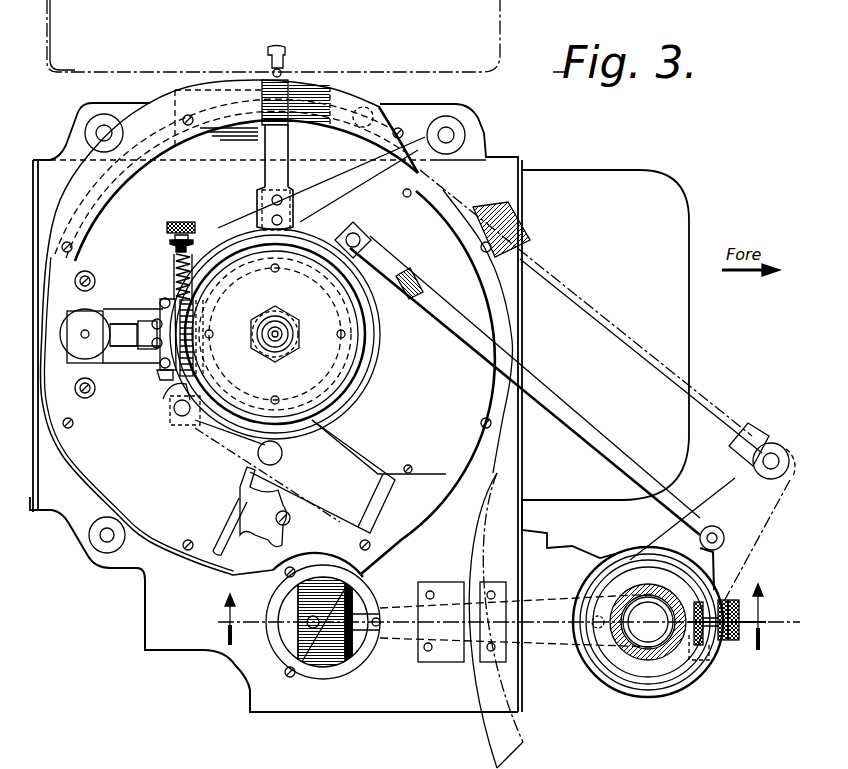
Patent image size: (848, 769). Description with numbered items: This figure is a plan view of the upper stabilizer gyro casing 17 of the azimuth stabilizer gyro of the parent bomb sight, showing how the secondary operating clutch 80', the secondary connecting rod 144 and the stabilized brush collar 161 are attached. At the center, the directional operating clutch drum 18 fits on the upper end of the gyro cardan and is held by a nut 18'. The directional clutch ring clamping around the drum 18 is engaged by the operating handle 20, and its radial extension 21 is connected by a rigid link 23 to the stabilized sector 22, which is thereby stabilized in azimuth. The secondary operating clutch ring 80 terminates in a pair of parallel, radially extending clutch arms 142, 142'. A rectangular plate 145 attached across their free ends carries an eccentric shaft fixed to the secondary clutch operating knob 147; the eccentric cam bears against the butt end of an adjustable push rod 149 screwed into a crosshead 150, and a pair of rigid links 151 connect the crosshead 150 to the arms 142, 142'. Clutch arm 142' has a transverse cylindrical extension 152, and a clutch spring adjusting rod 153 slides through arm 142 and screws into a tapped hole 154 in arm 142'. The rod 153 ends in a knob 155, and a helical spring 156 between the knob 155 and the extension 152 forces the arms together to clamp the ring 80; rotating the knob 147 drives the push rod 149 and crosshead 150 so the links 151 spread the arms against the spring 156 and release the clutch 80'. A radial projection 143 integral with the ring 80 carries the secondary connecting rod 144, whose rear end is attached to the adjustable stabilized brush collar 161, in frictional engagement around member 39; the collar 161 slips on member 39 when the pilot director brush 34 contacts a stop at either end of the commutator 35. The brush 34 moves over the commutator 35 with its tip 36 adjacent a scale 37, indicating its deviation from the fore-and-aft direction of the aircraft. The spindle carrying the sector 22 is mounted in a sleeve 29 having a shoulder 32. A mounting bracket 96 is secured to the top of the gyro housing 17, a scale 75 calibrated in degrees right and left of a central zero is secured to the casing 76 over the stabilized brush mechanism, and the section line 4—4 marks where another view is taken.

The mounting bracket 96 is at (195, 190).
The clutch spring adjusting knob 155 is at (172, 222).
The helical spring 156 is at (193, 245).
The clutch spring adjusting rod 153 is at (170, 244).
The cylindrical extension 152 is at (174, 258).
The clutch operating arm 142 is at (165, 313).
The adjustable push rod 149 is at (118, 325).
The crosshead 150 is at (140, 333).
The secondary clutch operating knob 147 is at (72, 329).
The rectangular plate 145 is at (80, 361).
The clutch operating arm 142' is at (138, 347).
The rigid links 151 is at (158, 366).
The secondary operating clutch 80' is at (161, 398).
The tapped hole 154 is at (180, 416).
The upper stabilizer gyro casing 17 is at (160, 470).
The operating handle 20 is at (225, 535).
The nut 18' is at (269, 323).
The directional operating clutch drum 18 is at (275, 340).
The secondary operating clutch ring 80 is at (285, 334).
The radial projection 143 is at (341, 230).
The radial extension 21 is at (425, 290).
The rigid link 23 is at (589, 298).
The secondary connecting rod 144 is at (566, 401).
The stabilized sector 22 is at (719, 493).
The adjustable stabilized brush collar 161 is at (621, 558).
The member 39 is at (603, 659).
The sleeve 29 is at (626, 589).
The shoulder 32 is at (634, 659).
The scale 37 is at (280, 602).
The pilot director brush 34 is at (346, 605).
The brush tip 36 is at (277, 659).
The commutator 35 is at (350, 645).
The casing 76 is at (365, 705).
The scale 75 is at (476, 732).
The section line 4- 4 is at (492, 617).